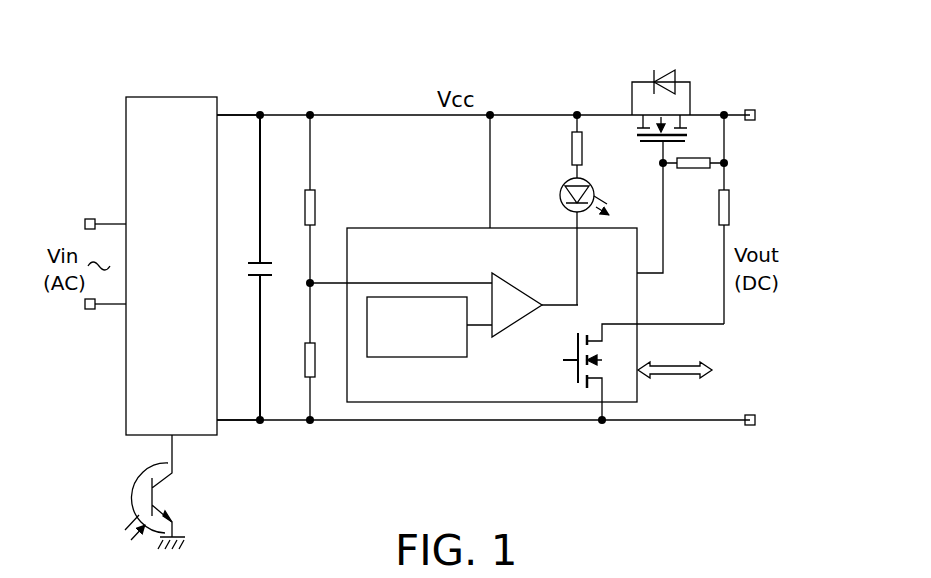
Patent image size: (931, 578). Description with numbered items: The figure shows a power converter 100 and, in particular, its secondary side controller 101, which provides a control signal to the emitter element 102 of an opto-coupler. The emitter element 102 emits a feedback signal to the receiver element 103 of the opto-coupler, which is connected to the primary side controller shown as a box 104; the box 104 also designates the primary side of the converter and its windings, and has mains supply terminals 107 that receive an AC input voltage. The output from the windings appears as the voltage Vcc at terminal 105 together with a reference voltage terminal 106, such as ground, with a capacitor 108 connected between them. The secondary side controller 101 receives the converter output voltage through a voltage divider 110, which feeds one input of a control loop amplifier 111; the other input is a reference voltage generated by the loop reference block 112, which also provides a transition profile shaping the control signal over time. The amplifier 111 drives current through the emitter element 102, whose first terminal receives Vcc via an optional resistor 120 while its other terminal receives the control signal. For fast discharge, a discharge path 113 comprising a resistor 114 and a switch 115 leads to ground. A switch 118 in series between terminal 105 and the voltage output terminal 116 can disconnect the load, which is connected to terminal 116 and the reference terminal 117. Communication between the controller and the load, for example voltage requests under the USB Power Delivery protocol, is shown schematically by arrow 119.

The power converter 100 is at (474, 56).
The secondary side controller 101 is at (472, 403).
The emitter element 102 is at (559, 191).
The receiver element 103 is at (165, 483).
The box 104 is at (173, 97).
The terminal 105 is at (238, 114).
The reference voltage terminal 106 is at (233, 421).
The mains supply terminals 107 is at (79, 205).
The capacitor 108 is at (252, 258).
The voltage divider 110 is at (320, 133).
The control loop amplifier 111 is at (518, 290).
The loop reference block 112 is at (385, 357).
The discharge path 113 is at (722, 250).
The resistor 114 is at (730, 206).
The switch 115 is at (566, 370).
The voltage output terminal 116 is at (750, 108).
The reference terminal 117 is at (745, 426).
The switch 118 is at (668, 70).
The arrow 119 is at (690, 361).
The resistor 120 is at (585, 150).